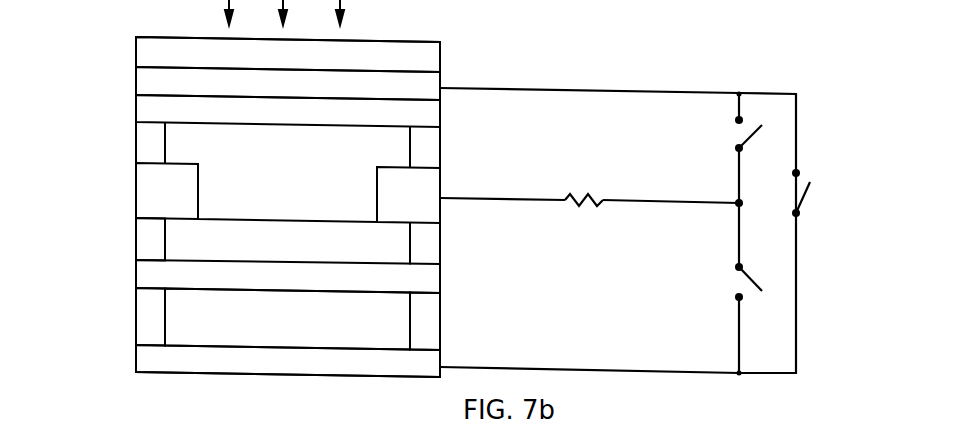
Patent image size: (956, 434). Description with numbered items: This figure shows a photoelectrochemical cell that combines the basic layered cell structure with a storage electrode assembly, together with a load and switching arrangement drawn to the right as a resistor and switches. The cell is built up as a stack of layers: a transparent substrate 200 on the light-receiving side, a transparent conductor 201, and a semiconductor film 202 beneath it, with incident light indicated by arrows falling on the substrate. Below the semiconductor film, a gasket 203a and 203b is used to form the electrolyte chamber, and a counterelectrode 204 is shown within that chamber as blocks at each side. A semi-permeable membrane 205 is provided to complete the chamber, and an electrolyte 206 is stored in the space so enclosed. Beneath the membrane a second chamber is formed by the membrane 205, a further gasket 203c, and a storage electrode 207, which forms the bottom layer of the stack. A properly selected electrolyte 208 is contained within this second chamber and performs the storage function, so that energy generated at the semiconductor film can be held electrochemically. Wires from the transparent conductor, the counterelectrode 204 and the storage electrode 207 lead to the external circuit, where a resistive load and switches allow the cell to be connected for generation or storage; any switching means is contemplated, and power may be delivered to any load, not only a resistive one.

The transparent substrate 200 is at (136, 53).
The transparent conductor 201 is at (136, 88).
The semiconductor film 202 is at (136, 110).
The gasket 203a is at (136, 146).
The gasket 203b is at (137, 253).
The gasket 203c is at (148, 317).
The counterelectrode 204 is at (136, 192).
The semi-permeable membrane 205 is at (137, 272).
The electrolyte 206 is at (262, 220).
The storage electrode 207 is at (135, 353).
The electrolyte 208 is at (238, 328).